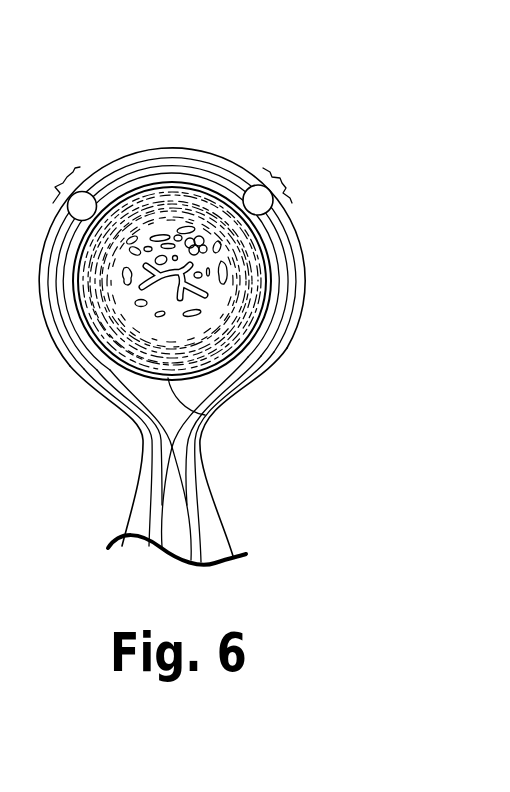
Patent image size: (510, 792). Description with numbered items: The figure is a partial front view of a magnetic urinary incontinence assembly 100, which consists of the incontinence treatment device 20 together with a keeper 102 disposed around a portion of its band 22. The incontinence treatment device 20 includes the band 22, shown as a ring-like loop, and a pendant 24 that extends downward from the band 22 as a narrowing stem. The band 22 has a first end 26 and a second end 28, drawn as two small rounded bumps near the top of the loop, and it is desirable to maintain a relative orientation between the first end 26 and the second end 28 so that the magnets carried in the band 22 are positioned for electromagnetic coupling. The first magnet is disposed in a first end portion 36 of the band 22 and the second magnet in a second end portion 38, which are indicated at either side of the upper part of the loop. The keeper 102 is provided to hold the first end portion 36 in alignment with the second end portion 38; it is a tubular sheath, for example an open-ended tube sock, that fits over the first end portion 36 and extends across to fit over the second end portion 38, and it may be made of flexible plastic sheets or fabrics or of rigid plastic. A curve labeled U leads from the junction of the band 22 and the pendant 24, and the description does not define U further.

The cell assembly 100 is at (326, 118).
The inner boundary 102 is at (164, 135).
The neck portion 20 is at (126, 436).
The outer wall 22 is at (288, 350).
The neck lines 24 is at (219, 510).
The left bump 26 is at (97, 194).
The right bump 28 is at (246, 188).
The left marker 36 is at (56, 178).
The right marker 38 is at (287, 178).
The U curve U is at (205, 415).